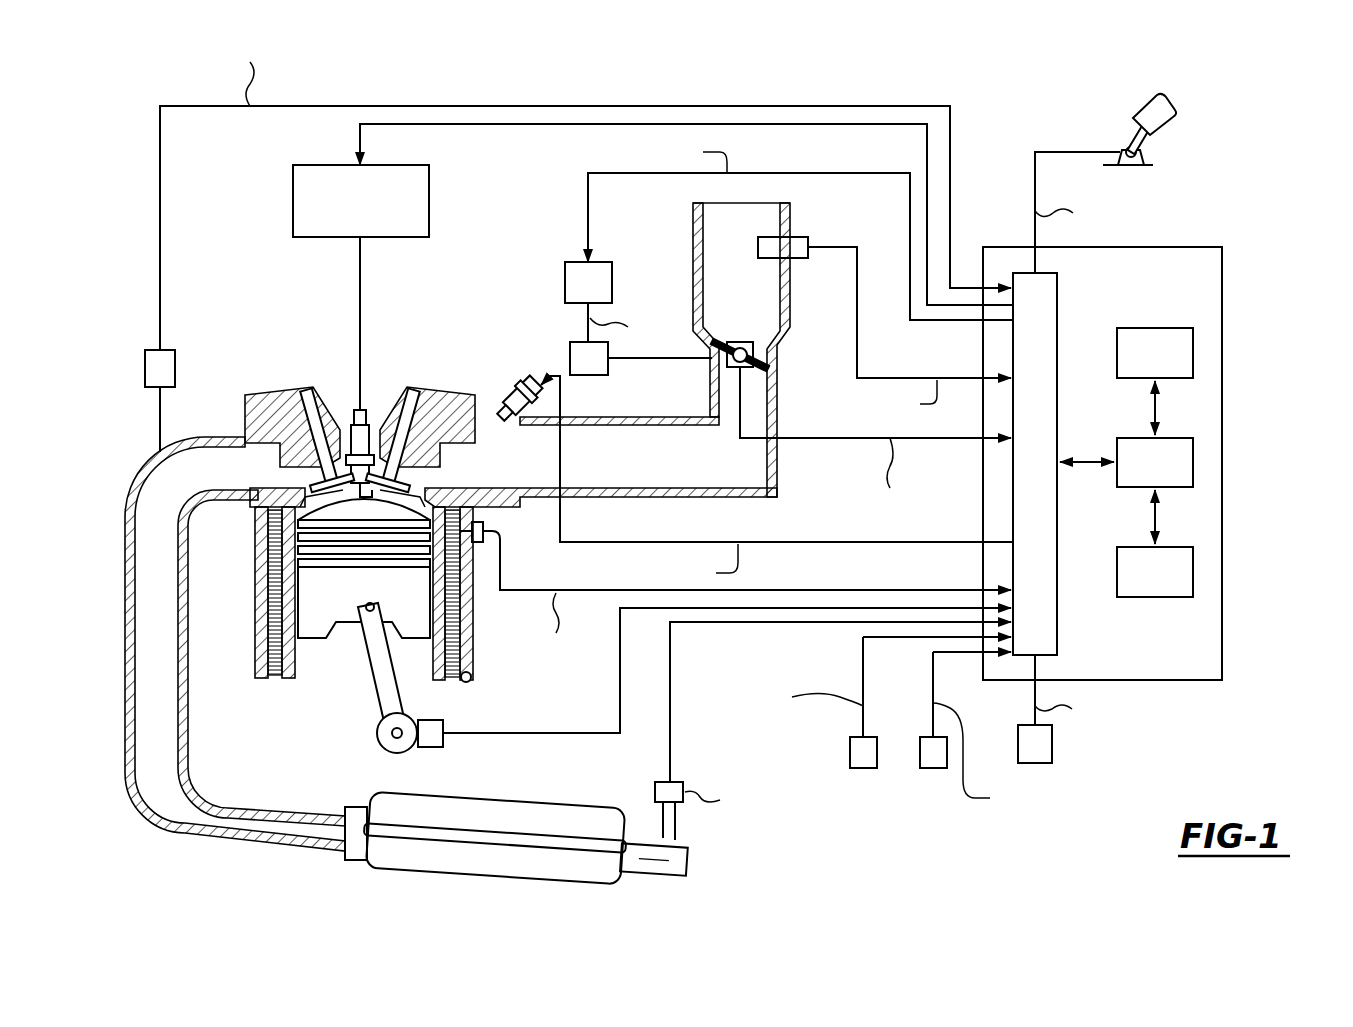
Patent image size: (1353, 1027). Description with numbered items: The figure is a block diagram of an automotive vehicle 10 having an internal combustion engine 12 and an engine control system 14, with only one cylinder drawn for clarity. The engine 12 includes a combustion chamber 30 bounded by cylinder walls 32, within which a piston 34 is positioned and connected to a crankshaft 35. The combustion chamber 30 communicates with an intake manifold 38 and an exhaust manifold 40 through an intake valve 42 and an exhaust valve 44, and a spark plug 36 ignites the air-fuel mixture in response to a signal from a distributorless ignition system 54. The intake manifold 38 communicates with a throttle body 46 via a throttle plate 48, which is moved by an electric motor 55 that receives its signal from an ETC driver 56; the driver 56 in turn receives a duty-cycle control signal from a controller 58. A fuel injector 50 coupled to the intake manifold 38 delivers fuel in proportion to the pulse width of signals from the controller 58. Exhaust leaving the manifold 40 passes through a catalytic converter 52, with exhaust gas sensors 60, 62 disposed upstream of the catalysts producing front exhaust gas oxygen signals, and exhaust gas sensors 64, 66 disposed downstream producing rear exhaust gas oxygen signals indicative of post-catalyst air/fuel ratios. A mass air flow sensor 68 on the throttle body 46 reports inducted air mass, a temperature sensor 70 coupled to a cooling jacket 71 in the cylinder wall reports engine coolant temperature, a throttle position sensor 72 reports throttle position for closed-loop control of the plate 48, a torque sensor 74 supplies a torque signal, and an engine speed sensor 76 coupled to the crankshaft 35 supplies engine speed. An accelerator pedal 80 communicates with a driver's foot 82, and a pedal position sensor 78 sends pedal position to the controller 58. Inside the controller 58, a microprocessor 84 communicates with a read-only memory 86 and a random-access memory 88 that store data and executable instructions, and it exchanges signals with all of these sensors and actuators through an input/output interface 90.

The automotive vehicle 10 is at (1030, 82).
The internal combustion engine 12 is at (366, 571).
The engine control system 14 is at (1158, 507).
The combustion chamber 30 is at (335, 554).
The cylinder walls 32 is at (290, 680).
The piston 34 is at (370, 643).
The crankshaft 35 is at (378, 733).
The spark plug 36 is at (364, 430).
The intake manifold 38 is at (665, 472).
The exhaust manifold 40 is at (150, 520).
The intake valve 42 is at (423, 472).
The exhaust valve 44 is at (305, 477).
The throttle body 46 is at (693, 271).
The throttle plate 48 is at (731, 341).
The fuel injector 50 is at (499, 398).
The catalytic converter 52 is at (587, 806).
The distributorless ignition system 54 is at (429, 200).
The electric motor 55 is at (570, 362).
The ETC driver 56 is at (565, 281).
The controller 58 is at (1185, 681).
The exhaust gas sensor 60 is at (145, 356).
The exhaust gas sensor 62 is at (862, 770).
The exhaust gas sensor 64 is at (684, 803).
The exhaust gas sensor 66 is at (933, 770).
The mass air flow sensor 68 is at (758, 248).
The temperature sensor 70 is at (498, 546).
The cooling jacket 71 is at (468, 680).
The throttle position sensor 72 is at (777, 353).
The torque sensor 74 is at (1052, 744).
The engine speed sensor 76 is at (431, 748).
The pedal position sensor 78 is at (1140, 147).
The accelerator pedal 80 is at (1108, 129).
The driver's foot 82 is at (1165, 111).
The microprocessor 84 is at (1193, 462).
The read-only memory 86 is at (1155, 328).
The random-access memory 88 is at (1193, 572).
The input/output interface 90 is at (1057, 300).